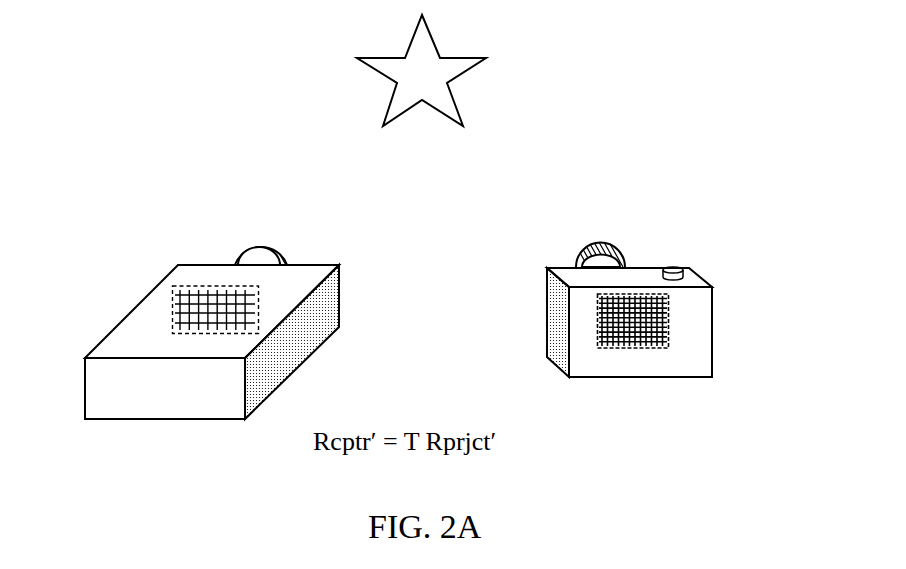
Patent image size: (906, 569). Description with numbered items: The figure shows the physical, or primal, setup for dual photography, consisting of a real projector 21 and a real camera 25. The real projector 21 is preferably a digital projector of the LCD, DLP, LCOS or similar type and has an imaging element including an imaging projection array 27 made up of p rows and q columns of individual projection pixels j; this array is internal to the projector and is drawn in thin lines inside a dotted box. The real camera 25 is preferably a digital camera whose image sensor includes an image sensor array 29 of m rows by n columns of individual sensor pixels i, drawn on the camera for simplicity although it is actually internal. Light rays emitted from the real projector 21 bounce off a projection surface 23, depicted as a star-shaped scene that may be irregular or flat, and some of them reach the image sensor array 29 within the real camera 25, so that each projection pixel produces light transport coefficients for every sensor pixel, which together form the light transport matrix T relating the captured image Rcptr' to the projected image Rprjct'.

The projection surface 23 is at (450, 54).
The real projector 21 is at (340, 305).
The imaging projection array 27 is at (283, 297).
The real camera 25 is at (547, 308).
The image sensor array 29 is at (690, 319).